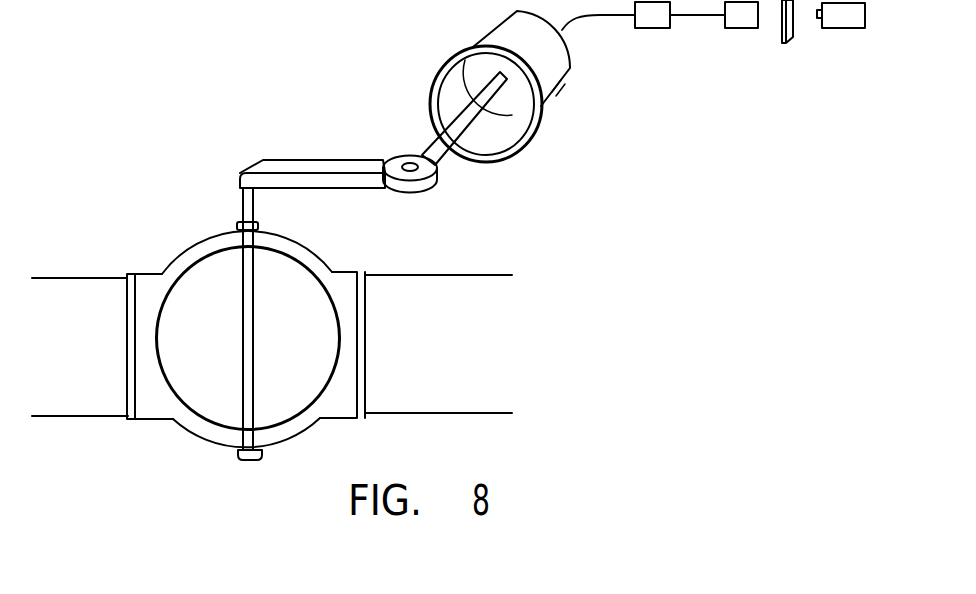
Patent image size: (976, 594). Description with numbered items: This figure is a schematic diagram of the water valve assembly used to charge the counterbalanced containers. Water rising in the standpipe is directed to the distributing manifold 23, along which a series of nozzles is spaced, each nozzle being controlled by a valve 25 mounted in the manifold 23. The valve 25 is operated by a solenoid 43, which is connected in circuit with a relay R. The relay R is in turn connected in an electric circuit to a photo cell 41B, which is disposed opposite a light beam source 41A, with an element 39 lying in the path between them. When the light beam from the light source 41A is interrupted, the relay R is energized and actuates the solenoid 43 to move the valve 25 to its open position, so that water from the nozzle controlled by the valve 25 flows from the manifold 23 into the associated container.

The distributing manifold 23 is at (453, 413).
The valve 25 is at (307, 352).
The solenoid 43 is at (569, 72).
The relay R is at (660, 28).
The photo cell 41B is at (743, 28).
The contact plate 39 is at (795, 28).
The light beam source 41A is at (853, 28).